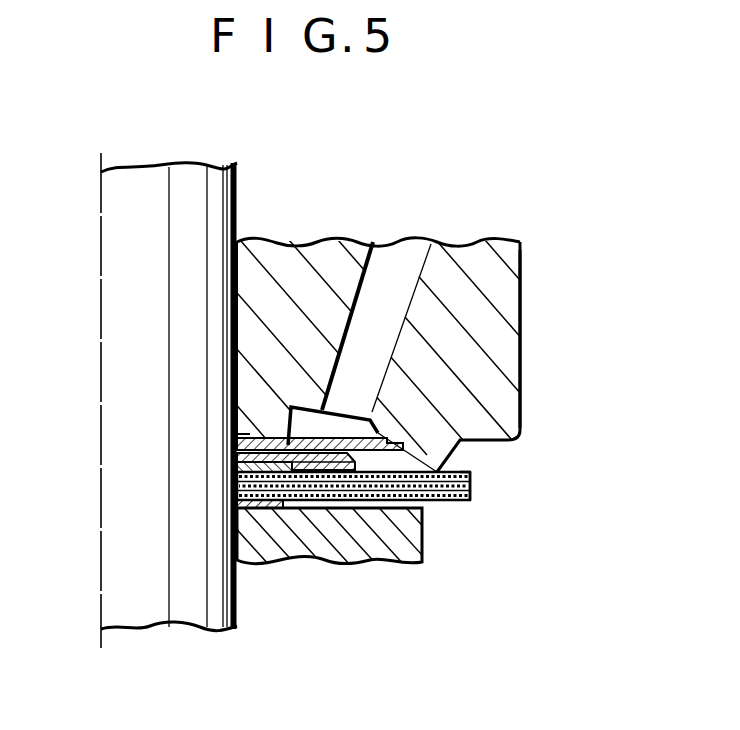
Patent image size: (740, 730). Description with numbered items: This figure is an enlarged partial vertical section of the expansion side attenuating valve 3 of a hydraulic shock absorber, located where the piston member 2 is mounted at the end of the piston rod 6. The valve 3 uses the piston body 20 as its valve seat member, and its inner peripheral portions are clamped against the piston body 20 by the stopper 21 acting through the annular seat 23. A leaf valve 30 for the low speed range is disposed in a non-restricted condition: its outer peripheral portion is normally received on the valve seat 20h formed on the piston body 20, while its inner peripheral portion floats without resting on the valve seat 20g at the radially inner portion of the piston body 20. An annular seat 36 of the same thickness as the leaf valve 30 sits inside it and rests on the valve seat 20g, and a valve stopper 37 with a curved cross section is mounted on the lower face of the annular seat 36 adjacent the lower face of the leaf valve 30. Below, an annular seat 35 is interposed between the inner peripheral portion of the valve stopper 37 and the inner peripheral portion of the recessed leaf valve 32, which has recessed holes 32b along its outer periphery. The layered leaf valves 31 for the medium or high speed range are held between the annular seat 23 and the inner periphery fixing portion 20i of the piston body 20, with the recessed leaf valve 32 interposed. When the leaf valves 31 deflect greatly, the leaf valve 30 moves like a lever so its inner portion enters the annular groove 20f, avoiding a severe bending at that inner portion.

The piston member 2 is at (456, 236).
The expansion side attenuating valve 3 is at (484, 500).
The piston rod 6 is at (155, 198).
The piston body 20 is at (477, 279).
The annular groove 20f is at (355, 418).
The valve seat 20g is at (276, 432).
The valve seat 20h is at (385, 434).
The inner periphery fixing portion 20i is at (257, 433).
The stopper 21 is at (385, 538).
The annular seat 23 is at (237, 503).
The leaf valve 30 is at (340, 420).
The leaf valves 31 is at (235, 482).
The recessed leaf valve 32 is at (235, 480).
The recessed holes 32b is at (471, 473).
The annular seat 35 is at (235, 466).
The annular seat 36 is at (235, 444).
The valve stopper 37 is at (235, 455).